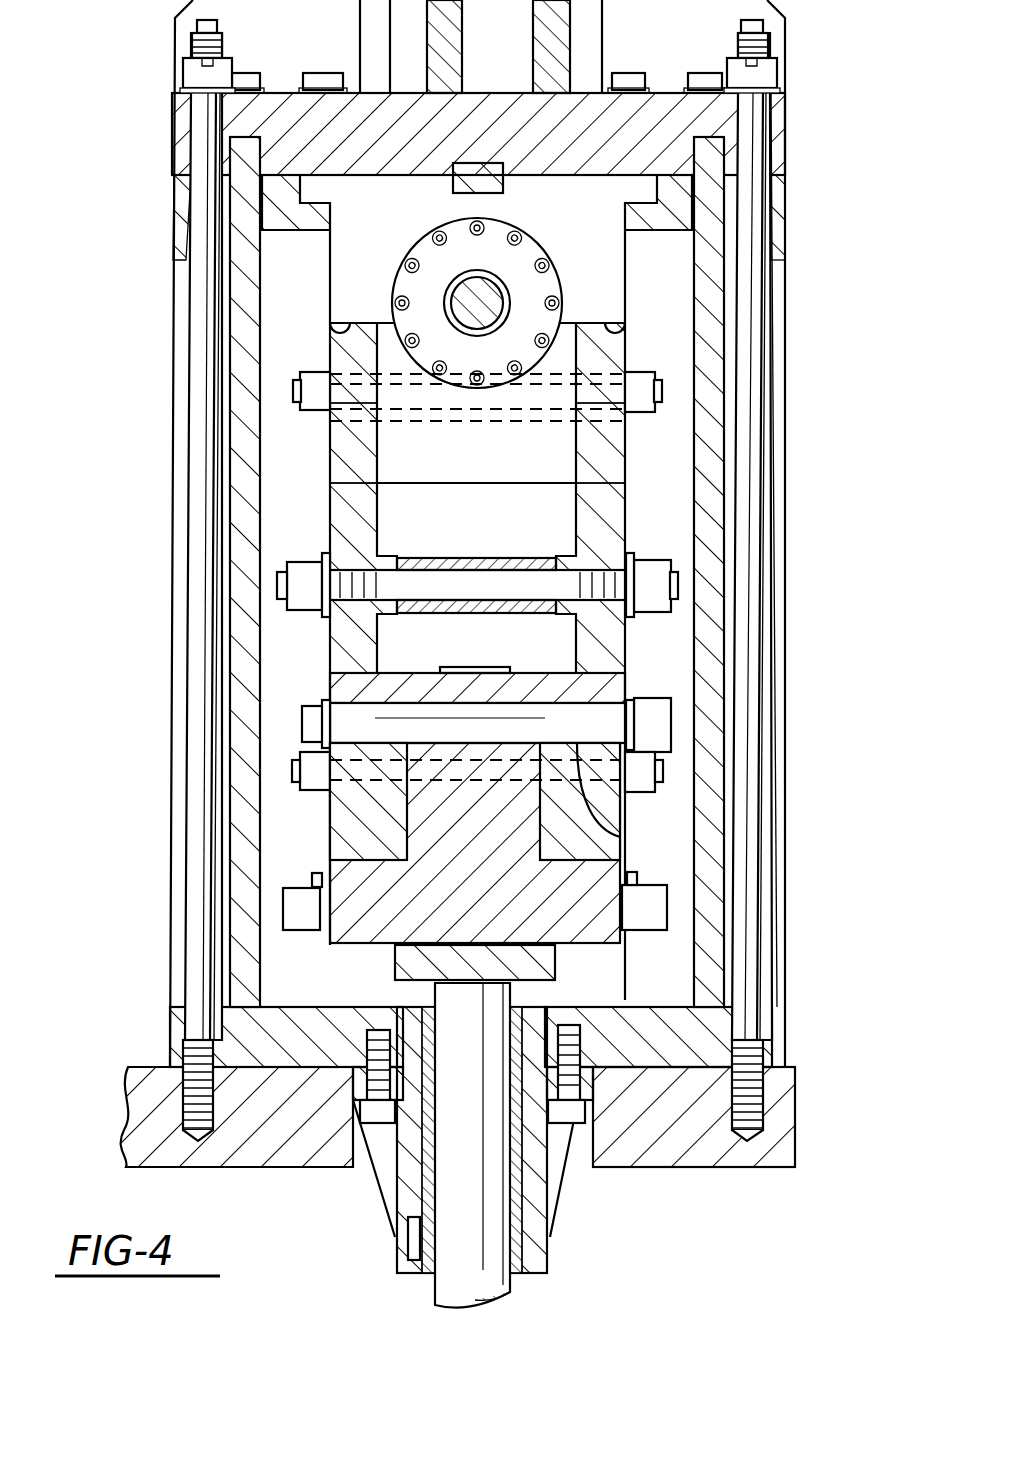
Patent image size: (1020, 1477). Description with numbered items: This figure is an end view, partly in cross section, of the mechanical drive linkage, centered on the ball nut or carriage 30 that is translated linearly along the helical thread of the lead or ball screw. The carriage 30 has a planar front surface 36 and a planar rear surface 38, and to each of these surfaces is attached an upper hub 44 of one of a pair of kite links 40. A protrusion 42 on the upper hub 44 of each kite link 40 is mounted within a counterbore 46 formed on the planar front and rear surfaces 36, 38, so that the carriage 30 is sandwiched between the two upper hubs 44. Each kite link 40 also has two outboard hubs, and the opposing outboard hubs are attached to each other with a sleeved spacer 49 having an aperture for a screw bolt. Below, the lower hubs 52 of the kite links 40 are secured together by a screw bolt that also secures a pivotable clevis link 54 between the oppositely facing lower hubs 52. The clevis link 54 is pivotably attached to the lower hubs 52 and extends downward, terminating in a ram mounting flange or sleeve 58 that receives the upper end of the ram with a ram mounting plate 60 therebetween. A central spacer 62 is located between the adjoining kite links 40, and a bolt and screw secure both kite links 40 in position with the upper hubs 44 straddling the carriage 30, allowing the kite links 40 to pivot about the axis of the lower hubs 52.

The ball nut or carriage 30 is at (516, 470).
The planar front surface 36 is at (375, 450).
The planar rear surface 38 is at (576, 448).
The kite links 40 is at (330, 517).
The protrusion 42 is at (330, 358).
The upper hub 44 is at (355, 492).
The counterbore 46 is at (340, 324).
The sleeved spacer 49 is at (620, 832).
The lower hubs 52 is at (330, 815).
The clevis link 54 is at (487, 850).
The ram mounting flange or sleeve 58 is at (360, 945).
The ram mounting plate 60 is at (555, 972).
The central spacer 62 is at (478, 613).